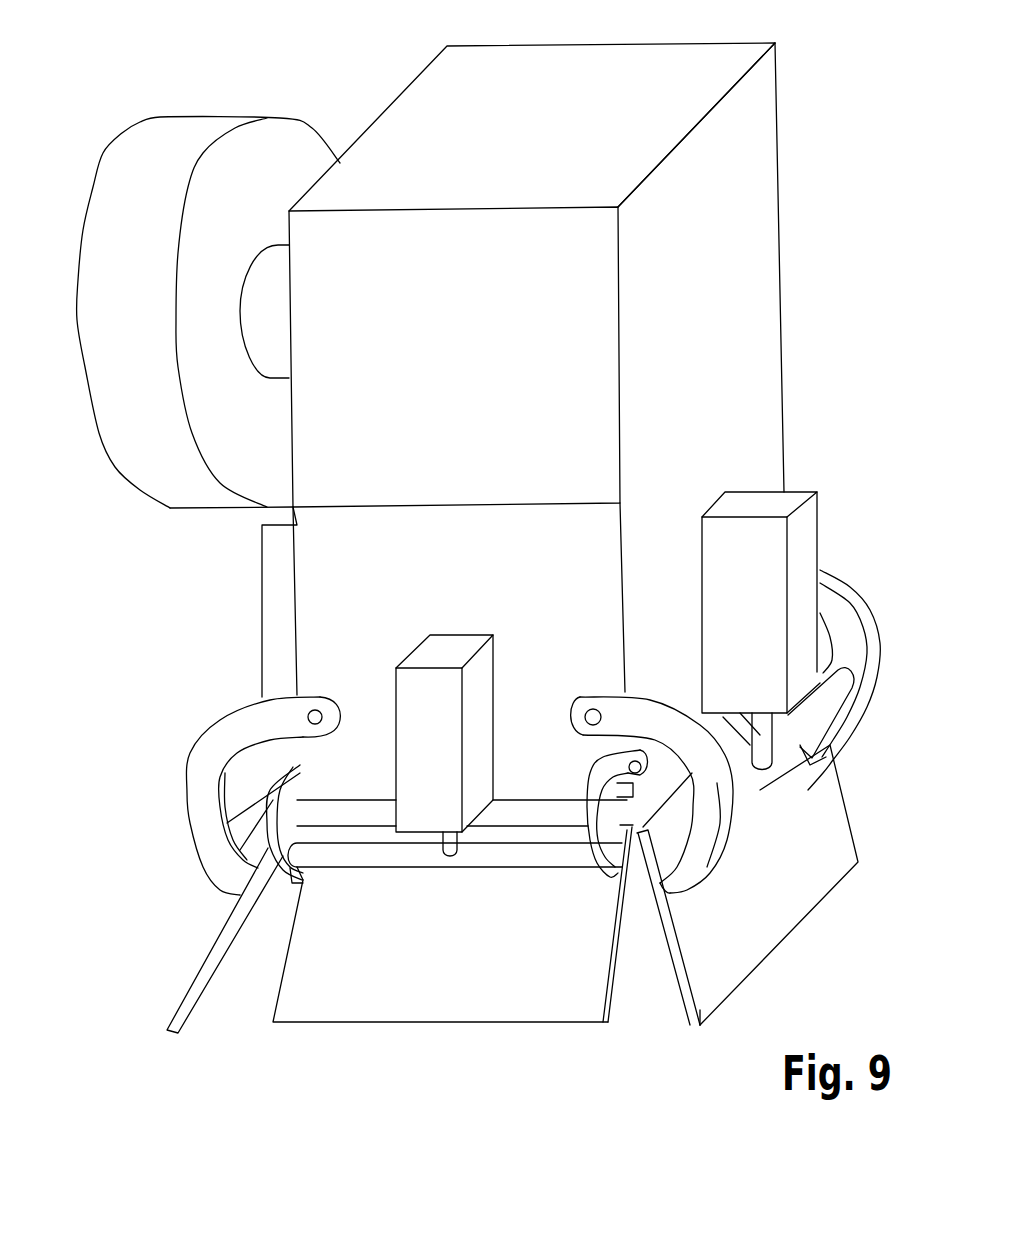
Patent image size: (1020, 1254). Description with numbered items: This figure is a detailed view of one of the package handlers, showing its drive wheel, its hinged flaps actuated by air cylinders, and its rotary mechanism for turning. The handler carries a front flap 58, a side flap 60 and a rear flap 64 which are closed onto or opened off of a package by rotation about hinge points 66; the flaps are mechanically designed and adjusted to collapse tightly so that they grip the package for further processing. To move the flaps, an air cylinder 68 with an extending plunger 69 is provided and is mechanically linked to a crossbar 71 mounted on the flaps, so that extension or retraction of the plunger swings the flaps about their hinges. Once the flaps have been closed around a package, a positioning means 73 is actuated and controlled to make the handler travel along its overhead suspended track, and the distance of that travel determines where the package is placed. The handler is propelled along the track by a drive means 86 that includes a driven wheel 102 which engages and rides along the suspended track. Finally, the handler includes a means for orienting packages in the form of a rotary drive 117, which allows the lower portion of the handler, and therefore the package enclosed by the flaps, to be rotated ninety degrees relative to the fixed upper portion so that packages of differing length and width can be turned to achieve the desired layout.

The front flap 58 is at (828, 870).
The side flap 60 is at (435, 970).
The rear flap 64 is at (185, 978).
The hinge points 66 is at (593, 715).
The air cylinder 68 is at (793, 538).
The extending plunger 69 is at (437, 853).
The crossbar 71 is at (488, 853).
The positioning means 73 is at (341, 150).
The drive means 86 is at (91, 188).
The driven wheel 102 is at (223, 380).
The rotary drive 117 is at (682, 342).